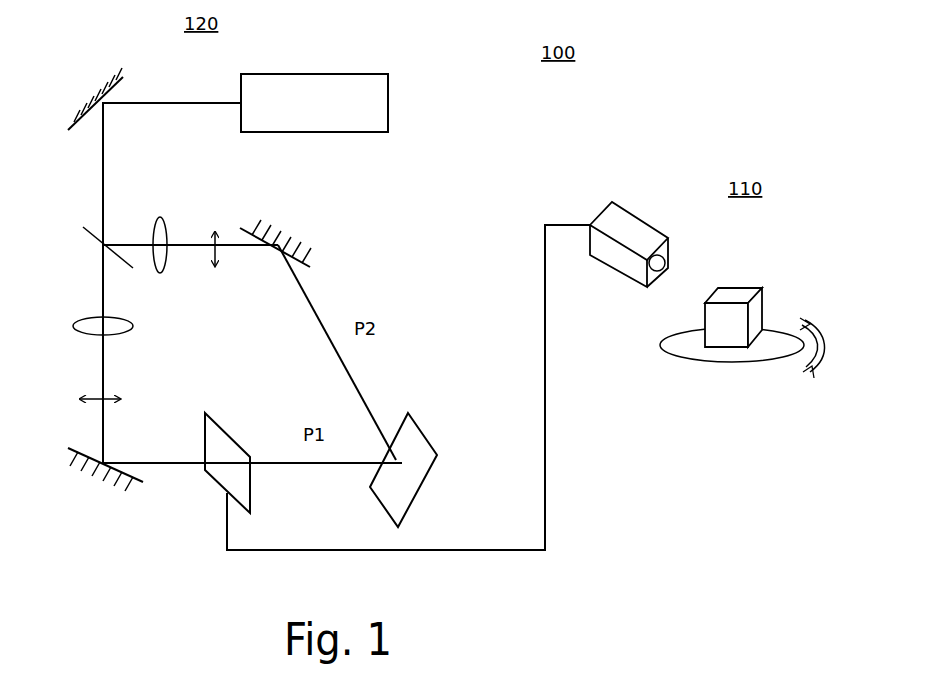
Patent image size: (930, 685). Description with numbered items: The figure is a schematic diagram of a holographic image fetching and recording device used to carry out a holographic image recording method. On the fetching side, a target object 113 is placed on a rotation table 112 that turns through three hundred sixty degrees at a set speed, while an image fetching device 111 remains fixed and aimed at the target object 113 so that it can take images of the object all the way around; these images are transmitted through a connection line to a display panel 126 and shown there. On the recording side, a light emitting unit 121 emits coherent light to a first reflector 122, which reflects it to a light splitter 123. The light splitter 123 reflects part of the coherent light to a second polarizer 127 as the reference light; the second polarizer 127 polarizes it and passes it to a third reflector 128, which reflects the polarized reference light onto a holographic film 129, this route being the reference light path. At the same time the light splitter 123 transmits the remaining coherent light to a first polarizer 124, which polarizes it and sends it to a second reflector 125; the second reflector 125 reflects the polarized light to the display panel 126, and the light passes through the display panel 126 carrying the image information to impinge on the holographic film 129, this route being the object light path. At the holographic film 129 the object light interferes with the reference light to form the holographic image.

The image fetching device 111 is at (612, 227).
The rotation table 112 is at (767, 357).
The target object 113 is at (755, 312).
The light emitting unit 121 is at (290, 77).
The first reflector 122 is at (70, 128).
The light splitter 123 is at (87, 228).
The first polarizer 124 is at (82, 318).
The second reflector 125 is at (73, 450).
The display panel 126 is at (208, 422).
The second polarizer 127 is at (162, 218).
The third reflector 128 is at (305, 255).
The holographic film 129 is at (418, 433).